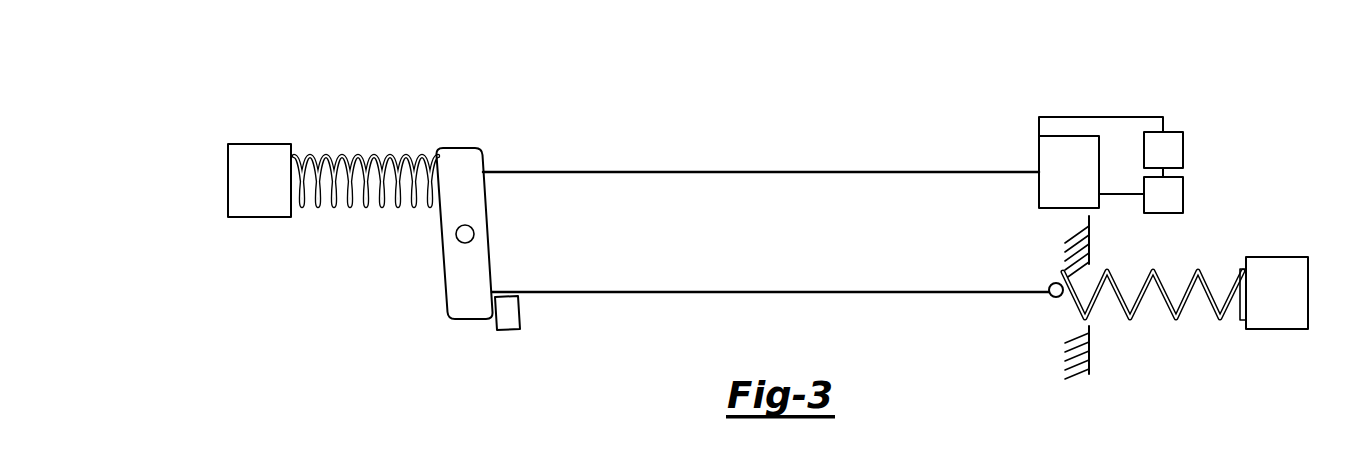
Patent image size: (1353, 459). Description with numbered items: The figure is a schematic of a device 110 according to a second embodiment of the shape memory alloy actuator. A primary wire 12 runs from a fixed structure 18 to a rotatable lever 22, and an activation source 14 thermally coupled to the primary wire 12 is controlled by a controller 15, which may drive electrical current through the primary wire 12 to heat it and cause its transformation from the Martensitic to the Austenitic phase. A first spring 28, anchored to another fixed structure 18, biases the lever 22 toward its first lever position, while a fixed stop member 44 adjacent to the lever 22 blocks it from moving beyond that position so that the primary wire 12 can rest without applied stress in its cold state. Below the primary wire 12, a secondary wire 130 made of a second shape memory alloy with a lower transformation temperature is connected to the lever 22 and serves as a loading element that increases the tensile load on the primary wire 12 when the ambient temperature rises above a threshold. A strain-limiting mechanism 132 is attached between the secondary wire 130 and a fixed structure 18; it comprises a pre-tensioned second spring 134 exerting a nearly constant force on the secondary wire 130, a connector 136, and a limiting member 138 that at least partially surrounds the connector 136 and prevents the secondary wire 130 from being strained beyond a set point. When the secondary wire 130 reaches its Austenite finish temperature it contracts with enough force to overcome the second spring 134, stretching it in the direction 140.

The primary wire 12 is at (763, 170).
The activation source 14 is at (1153, 162).
The controller 15 is at (1153, 207).
The fixed structure 18 is at (272, 193).
The rotatable lever 22 is at (458, 148).
The first spring 28 is at (324, 155).
The fixed stop member 44 is at (520, 312).
The device 110 is at (863, 77).
The secondary wire 130 is at (768, 290).
The strain-limiting mechanism 132 is at (1226, 374).
The second spring 134 is at (1175, 320).
The connector 136 is at (1050, 298).
The limiting member 138 is at (1090, 348).
The direction 140 is at (925, 332).